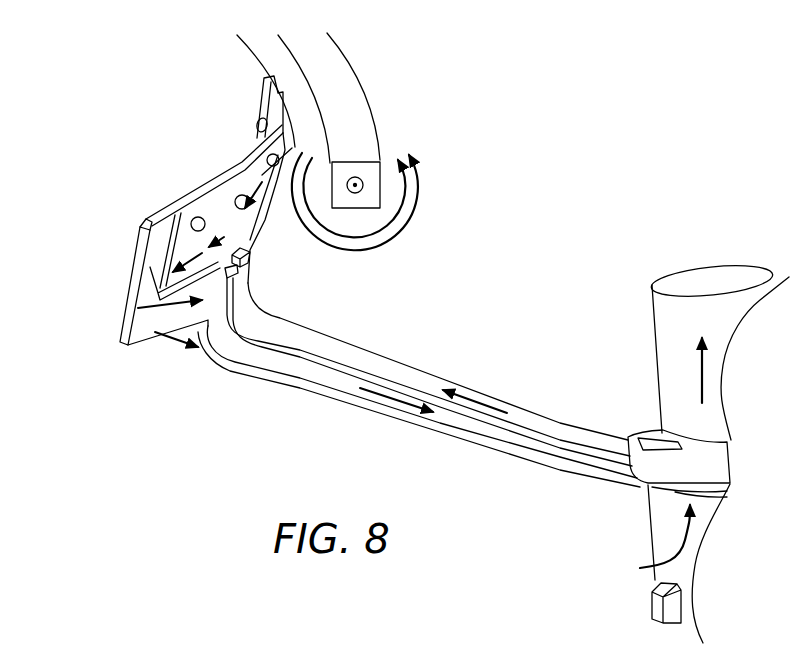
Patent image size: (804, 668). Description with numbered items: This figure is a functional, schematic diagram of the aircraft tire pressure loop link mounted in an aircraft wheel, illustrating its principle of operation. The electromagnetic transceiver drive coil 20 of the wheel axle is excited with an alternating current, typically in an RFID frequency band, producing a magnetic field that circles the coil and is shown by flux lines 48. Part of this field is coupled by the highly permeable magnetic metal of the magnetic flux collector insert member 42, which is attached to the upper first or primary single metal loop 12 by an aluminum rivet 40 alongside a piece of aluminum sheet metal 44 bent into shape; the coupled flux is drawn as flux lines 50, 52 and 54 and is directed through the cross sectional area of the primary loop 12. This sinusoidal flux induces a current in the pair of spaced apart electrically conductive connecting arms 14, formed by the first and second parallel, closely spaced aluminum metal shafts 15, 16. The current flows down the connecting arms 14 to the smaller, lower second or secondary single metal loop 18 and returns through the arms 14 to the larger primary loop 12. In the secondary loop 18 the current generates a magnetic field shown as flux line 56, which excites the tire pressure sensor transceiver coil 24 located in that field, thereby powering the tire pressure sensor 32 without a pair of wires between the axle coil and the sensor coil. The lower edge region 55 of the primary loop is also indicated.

The first or primary single metal loop 12 is at (168, 245).
The pair of spaced apart electrically conductive connecting arms 14 is at (419, 391).
The metal shaft 15 is at (533, 417).
The metal shaft 16 is at (493, 423).
The second or secondary single metal loop 18 is at (665, 487).
The electromagnetic transceiver drive coil 20 is at (345, 82).
The tire pressure sensor transceiver coil 24 is at (652, 564).
The tire pressure sensor 32 is at (685, 283).
The aluminum rivet 40 is at (198, 217).
The magnetic flux collector insert member 42 is at (252, 185).
The aluminum sheet metal piece 44 is at (338, 352).
The flux lines 48 is at (413, 213).
The flux line 50 is at (180, 247).
The flux line 52 is at (224, 237).
The flux line 54 is at (258, 185).
The clamp lower edge 55 is at (155, 333).
The flux line 56 is at (702, 377).